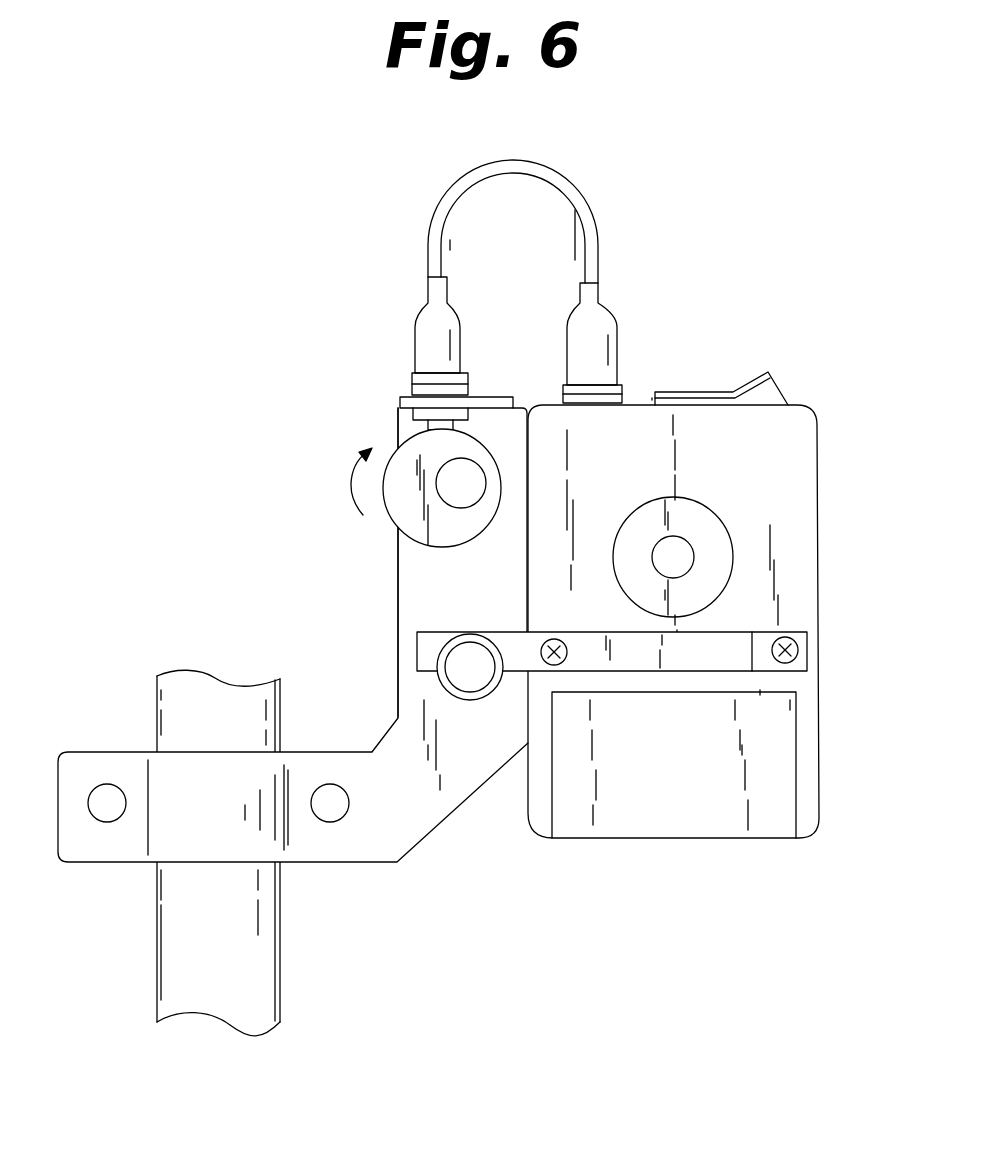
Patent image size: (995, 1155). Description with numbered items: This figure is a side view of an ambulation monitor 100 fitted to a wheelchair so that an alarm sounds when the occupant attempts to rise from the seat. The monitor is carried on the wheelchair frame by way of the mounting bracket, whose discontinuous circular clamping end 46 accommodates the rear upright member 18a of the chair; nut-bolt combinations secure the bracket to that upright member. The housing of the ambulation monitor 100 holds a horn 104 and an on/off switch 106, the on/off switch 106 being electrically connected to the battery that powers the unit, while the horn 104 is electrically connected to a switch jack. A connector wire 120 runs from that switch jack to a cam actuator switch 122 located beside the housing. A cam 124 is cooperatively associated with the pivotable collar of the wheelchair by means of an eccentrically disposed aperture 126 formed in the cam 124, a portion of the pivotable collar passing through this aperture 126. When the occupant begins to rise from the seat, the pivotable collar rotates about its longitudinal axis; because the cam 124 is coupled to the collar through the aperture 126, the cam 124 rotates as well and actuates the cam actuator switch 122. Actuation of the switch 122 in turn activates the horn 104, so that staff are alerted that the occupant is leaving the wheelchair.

The rear upright member 18a is at (265, 933).
The clamping end 46 is at (162, 763).
The ambulation monitor 100 is at (718, 233).
The horn 104 is at (735, 510).
The on/off switch 106 is at (730, 377).
The connector wire 120 is at (537, 173).
The cam actuator switch 122 is at (403, 420).
The cam 124 is at (380, 527).
The eccentrically disposed aperture 126 is at (453, 487).